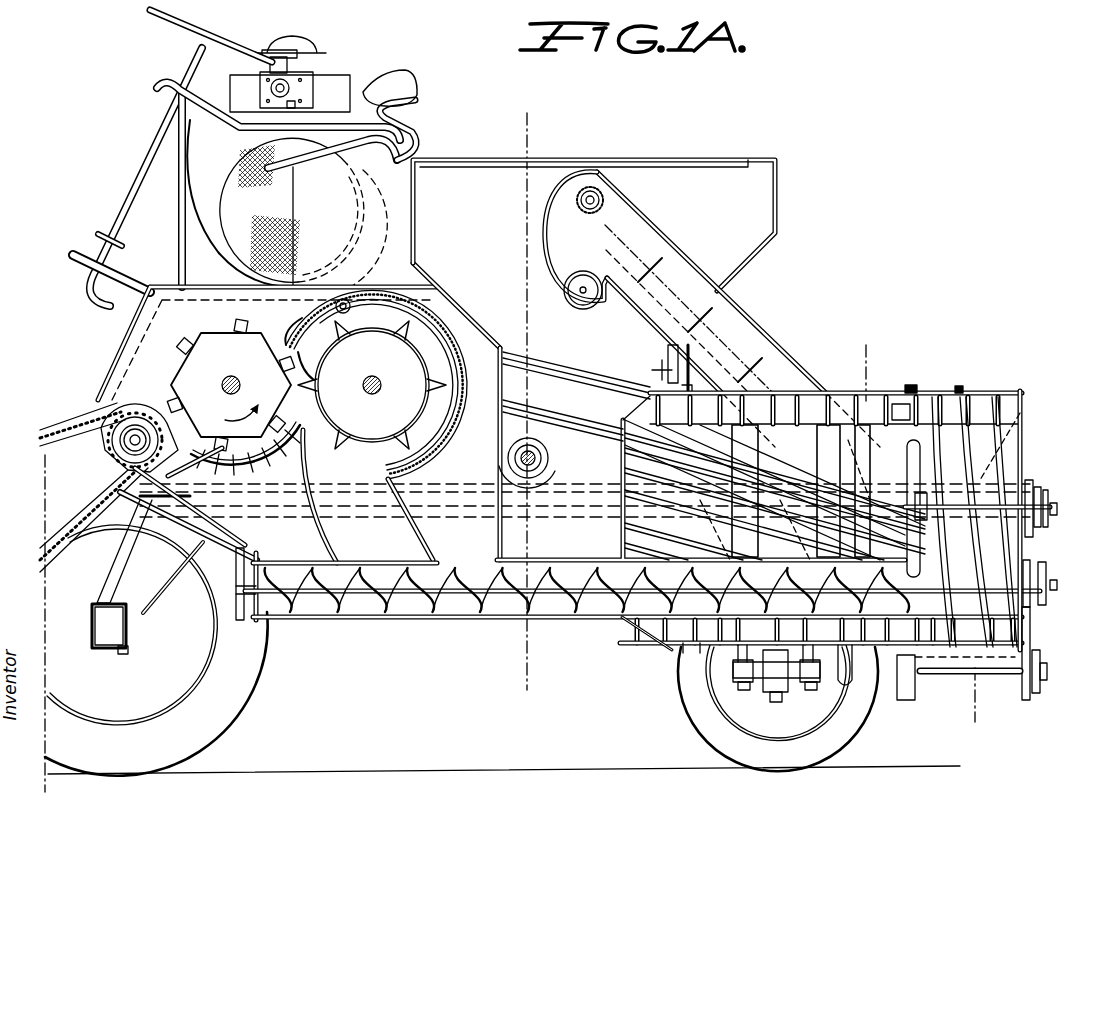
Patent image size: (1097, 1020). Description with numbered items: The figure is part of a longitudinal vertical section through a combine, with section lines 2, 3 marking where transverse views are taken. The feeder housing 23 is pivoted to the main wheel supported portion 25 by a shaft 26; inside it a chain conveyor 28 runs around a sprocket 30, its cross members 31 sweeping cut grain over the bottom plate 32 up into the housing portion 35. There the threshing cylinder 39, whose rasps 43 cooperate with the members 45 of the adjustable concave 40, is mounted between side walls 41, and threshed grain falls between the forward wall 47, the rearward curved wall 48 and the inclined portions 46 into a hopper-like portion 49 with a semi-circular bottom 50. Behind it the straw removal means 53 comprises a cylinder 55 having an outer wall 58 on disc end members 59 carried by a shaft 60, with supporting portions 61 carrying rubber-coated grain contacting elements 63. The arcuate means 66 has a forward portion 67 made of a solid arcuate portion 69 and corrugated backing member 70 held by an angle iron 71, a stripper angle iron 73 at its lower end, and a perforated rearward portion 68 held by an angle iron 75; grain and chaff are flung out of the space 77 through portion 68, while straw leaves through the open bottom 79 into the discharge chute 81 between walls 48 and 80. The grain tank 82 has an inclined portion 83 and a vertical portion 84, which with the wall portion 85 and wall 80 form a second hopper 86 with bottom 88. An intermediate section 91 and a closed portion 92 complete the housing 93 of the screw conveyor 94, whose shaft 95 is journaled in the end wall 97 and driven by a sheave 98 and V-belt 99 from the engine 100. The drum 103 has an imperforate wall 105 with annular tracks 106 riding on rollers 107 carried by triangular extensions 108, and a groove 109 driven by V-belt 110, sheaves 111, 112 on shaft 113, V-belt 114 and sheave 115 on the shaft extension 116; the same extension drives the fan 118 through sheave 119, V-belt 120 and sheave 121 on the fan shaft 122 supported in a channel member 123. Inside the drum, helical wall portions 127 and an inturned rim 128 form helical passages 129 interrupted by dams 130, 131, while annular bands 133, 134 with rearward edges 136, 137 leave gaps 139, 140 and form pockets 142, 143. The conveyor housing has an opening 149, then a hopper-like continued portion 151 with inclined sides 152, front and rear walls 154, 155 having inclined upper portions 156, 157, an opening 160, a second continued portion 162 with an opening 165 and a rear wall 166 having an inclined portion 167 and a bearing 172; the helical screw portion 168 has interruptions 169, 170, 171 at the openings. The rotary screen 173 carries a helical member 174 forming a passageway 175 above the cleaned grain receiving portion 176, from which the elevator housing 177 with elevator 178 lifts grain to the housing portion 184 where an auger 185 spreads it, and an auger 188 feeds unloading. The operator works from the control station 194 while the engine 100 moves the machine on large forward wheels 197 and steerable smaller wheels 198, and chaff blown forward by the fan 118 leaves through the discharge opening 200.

The section line 2- 2 is at (510, 128).
The section line 3- 3 is at (850, 360).
The feeder housing 23 is at (50, 420).
The main wheel supported portion 25 is at (128, 318).
The shaft 26 is at (139, 417).
The chain conveyor 28 is at (95, 425).
The sprocket 30 is at (100, 450).
The cross members 31 is at (96, 522).
The bottom plate 32 is at (80, 556).
The housing portion 35 is at (118, 359).
The threshing cylinder 39 is at (183, 362).
The concave 40 is at (215, 468).
The side walls 41 is at (160, 344).
The rasps 43 is at (232, 326).
The transversely extending members 45 is at (262, 462).
The lower inwardly inclined portions 46 is at (228, 568).
The forward inclined wall 47 is at (240, 530).
The rearward curved and inclined wall 48 is at (306, 436).
The hopper-like portion 49 is at (240, 553).
The semi-circular shaped bottom portion 50 is at (312, 622).
The straw removal means 53 is at (470, 318).
The cylinder 55 is at (452, 357).
The outer cylindrical wall 58 is at (472, 332).
The disc-shaped end members 59 is at (415, 392).
The shaft 60 is at (372, 394).
The radially outwardly extending portions 61 is at (338, 372).
The grain contacting elements 63 is at (398, 340).
The arcuate harvested grain engaging means 66 is at (430, 284).
The forward portion 67 is at (352, 285).
The rearward portion 68 is at (456, 308).
The unperforated arcuate portion 69 is at (302, 354).
The corrugated backing member 70 is at (347, 312).
The arcuate angle iron 71 is at (318, 312).
The grain stripper angle iron member 73 is at (280, 362).
The arcuate angle iron 75 is at (442, 460).
The space 77 is at (461, 425).
The open bottom 79 is at (358, 452).
The wall portion 80 is at (424, 537).
The discharge chute 81 is at (348, 541).
The grain tank 82 is at (782, 190).
The inclined portion 83 is at (447, 288).
The vertical portion 84 is at (450, 441).
The wall portion 85 is at (497, 478).
The second hopper-like portion 86 is at (448, 551).
The semi-circular shaped portion 88 is at (470, 620).
The intermediate section 91 is at (402, 576).
The closed portion 92 is at (585, 622).
The conveyor housing 93 is at (415, 630).
The screw conveyor 94 is at (472, 580).
The shaft portion 95 is at (473, 588).
The forward end wall 97 is at (256, 625).
The sheave 98 is at (236, 618).
The V-belt 99 is at (237, 557).
The engine 100 is at (358, 72).
The drum 103 is at (905, 392).
The cylindrical outer wall 105 is at (848, 390).
The annular tracks 106 is at (925, 390).
The rollers 107 is at (666, 350).
The rearward extension 108 is at (1024, 420).
The V-shaped annular groove structure 109 is at (922, 386).
The V-belt 110 is at (898, 685).
The sheave 111 is at (908, 700).
The sheave 112 is at (1030, 695).
The shaft 113 is at (932, 676).
The V-belt 114 is at (1034, 650).
The sheave 115 is at (1040, 560).
The rearward extension 116 is at (980, 590).
The fan 118 is at (935, 532).
The sheave 119 is at (1032, 625).
The V-belt 120 is at (1048, 490).
The sheave 121 is at (1042, 487).
The fan shaft 122 is at (988, 510).
The channel member 123 is at (1024, 450).
The helically disposed wall portions 127 is at (620, 443).
The inturned rim portion 128 is at (643, 385).
The helical passages 129 is at (620, 460).
The dam elements 130 is at (805, 393).
The dam elements 131 is at (905, 430).
The annular band 133 is at (732, 460).
The annular band 134 is at (816, 392).
The rearward circular edge 136 is at (798, 380).
The rearward circular edge 137 is at (868, 458).
The first annular gap 139 is at (767, 467).
The second annular gap 140 is at (868, 470).
The pockets 142 is at (788, 366).
The pockets 143 is at (882, 393).
The opening 149 is at (690, 600).
The continued portion 151 is at (736, 658).
The outwardly inclined side portions 152 is at (743, 567).
The front wall 154 is at (660, 645).
The rear wall 155 is at (735, 683).
The inclined upper portion 156 is at (622, 540).
The inclined upper portion 157 is at (800, 560).
The opening 160 is at (768, 692).
The second continued portion 162 is at (822, 682).
The opening 165 is at (846, 675).
The rear wall 166 is at (985, 565).
The inclined upper portion 167 is at (932, 548).
The helical screw portion 168 is at (300, 580).
The interruption 169 is at (648, 582).
The interruption 170 is at (758, 572).
The interruption 171 is at (868, 645).
The bearing means 172 is at (960, 572).
The rotary screen 173 is at (992, 392).
The helical member 174 is at (938, 422).
The helical passageway 175 is at (934, 478).
The cleaned grain receiving portion 176 is at (998, 673).
The grain elevator housing 177 is at (728, 302).
The grain elevator 178 is at (742, 324).
The housing portion 184 is at (553, 205).
The auger 185 is at (576, 300).
The transversely extending auger 188 is at (533, 440).
The control station 194 is at (416, 70).
The large forward wheels 197 is at (243, 700).
The smaller wheels 198 is at (855, 740).
The discharge opening 200 is at (568, 535).